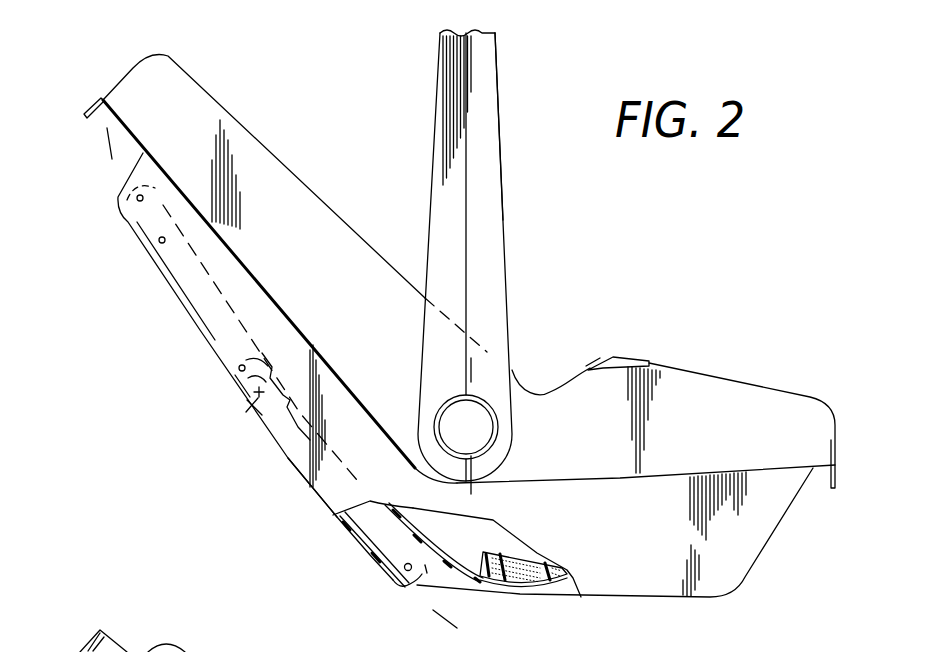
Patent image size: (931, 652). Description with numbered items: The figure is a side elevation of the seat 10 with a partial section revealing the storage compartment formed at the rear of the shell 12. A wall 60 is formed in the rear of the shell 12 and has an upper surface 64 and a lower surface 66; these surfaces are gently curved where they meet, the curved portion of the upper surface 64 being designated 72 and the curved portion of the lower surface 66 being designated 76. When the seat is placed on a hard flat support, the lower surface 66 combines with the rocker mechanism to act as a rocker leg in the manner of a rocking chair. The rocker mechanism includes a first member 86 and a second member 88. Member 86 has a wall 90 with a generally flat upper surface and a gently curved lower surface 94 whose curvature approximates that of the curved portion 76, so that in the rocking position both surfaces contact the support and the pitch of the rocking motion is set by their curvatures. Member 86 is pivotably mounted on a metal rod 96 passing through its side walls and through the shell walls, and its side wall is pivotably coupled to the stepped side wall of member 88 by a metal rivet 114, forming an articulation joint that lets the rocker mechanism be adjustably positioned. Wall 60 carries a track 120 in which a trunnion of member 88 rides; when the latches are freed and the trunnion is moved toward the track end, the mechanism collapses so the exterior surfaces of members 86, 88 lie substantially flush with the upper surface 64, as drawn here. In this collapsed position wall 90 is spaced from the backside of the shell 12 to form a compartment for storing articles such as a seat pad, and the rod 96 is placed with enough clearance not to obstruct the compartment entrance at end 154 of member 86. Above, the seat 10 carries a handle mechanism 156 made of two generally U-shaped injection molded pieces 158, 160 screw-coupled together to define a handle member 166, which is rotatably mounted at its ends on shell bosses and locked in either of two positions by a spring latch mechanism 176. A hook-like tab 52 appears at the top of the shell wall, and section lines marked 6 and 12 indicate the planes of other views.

The section line 6- 6 is at (100, 137).
The seat 10 is at (392, 157).
The shell 12 is at (442, 363).
The hook tab 52 is at (613, 356).
The wall 60 is at (730, 555).
The upper surface 64 is at (225, 373).
The lower surface 66 is at (577, 602).
The curved portion 72 is at (322, 507).
The curved portion 76 is at (512, 596).
The first member 86 is at (292, 454).
The second member 88 is at (195, 325).
The wall 90 is at (361, 526).
The curved lower surface 94 is at (357, 545).
The metal rod 96 is at (392, 590).
The metal rivet 114 is at (237, 428).
The track 120 is at (243, 307).
The end 154 is at (413, 596).
The handle mechanism 156 is at (528, 438).
The handle piece 158 is at (440, 191).
The handle piece 160 is at (493, 207).
The handle member 166 is at (506, 125).
The spring latch mechanism 176 is at (440, 412).